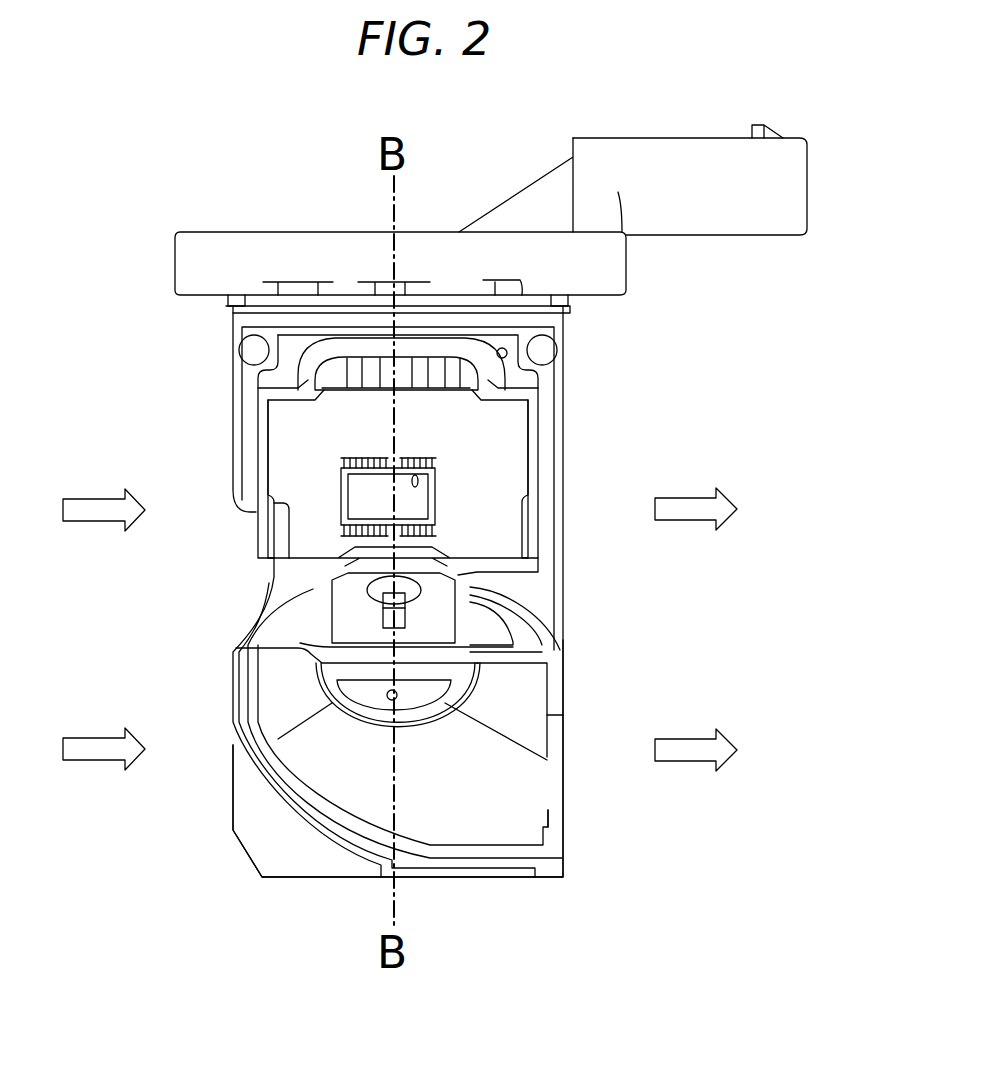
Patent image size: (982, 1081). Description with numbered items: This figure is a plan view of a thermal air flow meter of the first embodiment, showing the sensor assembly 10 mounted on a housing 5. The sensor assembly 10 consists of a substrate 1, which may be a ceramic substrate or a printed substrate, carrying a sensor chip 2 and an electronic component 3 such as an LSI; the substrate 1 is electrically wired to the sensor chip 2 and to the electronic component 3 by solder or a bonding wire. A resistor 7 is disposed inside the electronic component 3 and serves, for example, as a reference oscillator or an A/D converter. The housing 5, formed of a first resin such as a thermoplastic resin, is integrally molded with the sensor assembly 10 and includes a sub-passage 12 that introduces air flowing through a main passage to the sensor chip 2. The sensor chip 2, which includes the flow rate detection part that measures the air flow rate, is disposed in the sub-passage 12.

The substrate 1 is at (491, 501).
The sensor chip 2 is at (385, 612).
The electronic component 3 is at (362, 490).
The housing 5 is at (532, 600).
The resistor 7 is at (437, 475).
The sensor assembly 10 is at (492, 513).
The sub-passage 12 is at (475, 803).